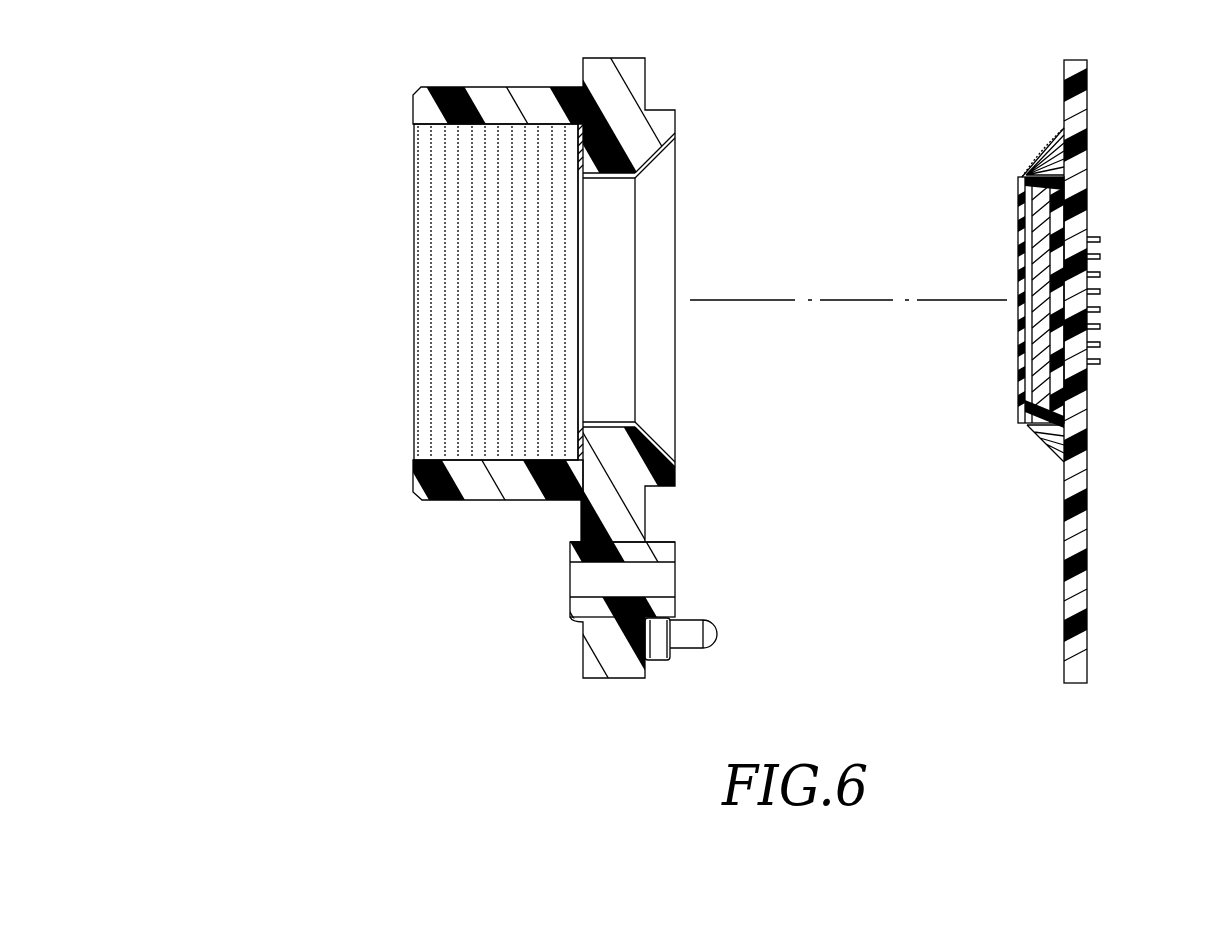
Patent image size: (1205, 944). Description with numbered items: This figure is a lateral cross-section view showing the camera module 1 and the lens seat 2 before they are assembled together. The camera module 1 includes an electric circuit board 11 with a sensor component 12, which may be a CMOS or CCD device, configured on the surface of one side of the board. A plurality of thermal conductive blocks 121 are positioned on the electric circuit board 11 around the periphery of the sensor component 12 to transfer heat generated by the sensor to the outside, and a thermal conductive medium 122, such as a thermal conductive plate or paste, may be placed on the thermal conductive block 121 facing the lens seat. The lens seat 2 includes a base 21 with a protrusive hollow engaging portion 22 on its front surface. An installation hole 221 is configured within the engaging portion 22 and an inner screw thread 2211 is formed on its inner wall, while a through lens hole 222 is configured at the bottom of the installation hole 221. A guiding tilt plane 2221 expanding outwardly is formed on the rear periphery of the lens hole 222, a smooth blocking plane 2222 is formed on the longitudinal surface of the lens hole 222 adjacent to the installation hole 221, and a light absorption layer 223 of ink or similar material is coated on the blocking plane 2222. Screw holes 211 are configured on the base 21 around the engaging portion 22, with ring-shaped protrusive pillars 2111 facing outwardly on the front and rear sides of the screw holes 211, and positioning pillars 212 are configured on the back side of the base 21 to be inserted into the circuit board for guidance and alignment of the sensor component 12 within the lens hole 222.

The camera module 1 is at (1100, 65).
The electric circuit board 11 is at (1077, 103).
The sensor component 12 is at (1042, 232).
The thermal conductive block 121 is at (1037, 163).
The thermal conductive medium 122 is at (1060, 140).
The lens seat 2 is at (658, 50).
The base 21 is at (607, 72).
The screw hole 211 is at (583, 578).
The ring-shaped protrusive pillar 2111 is at (570, 542).
The positioning pillar 212 is at (690, 627).
The engaging portion 22 is at (484, 102).
The installation hole 221 is at (447, 192).
The inner screw thread 2211 is at (453, 248).
The lens hole 222 is at (623, 230).
The guiding tilt plane 2221 is at (655, 152).
The blocking plane 2222 is at (588, 172).
The light absorption layer 223 is at (585, 442).